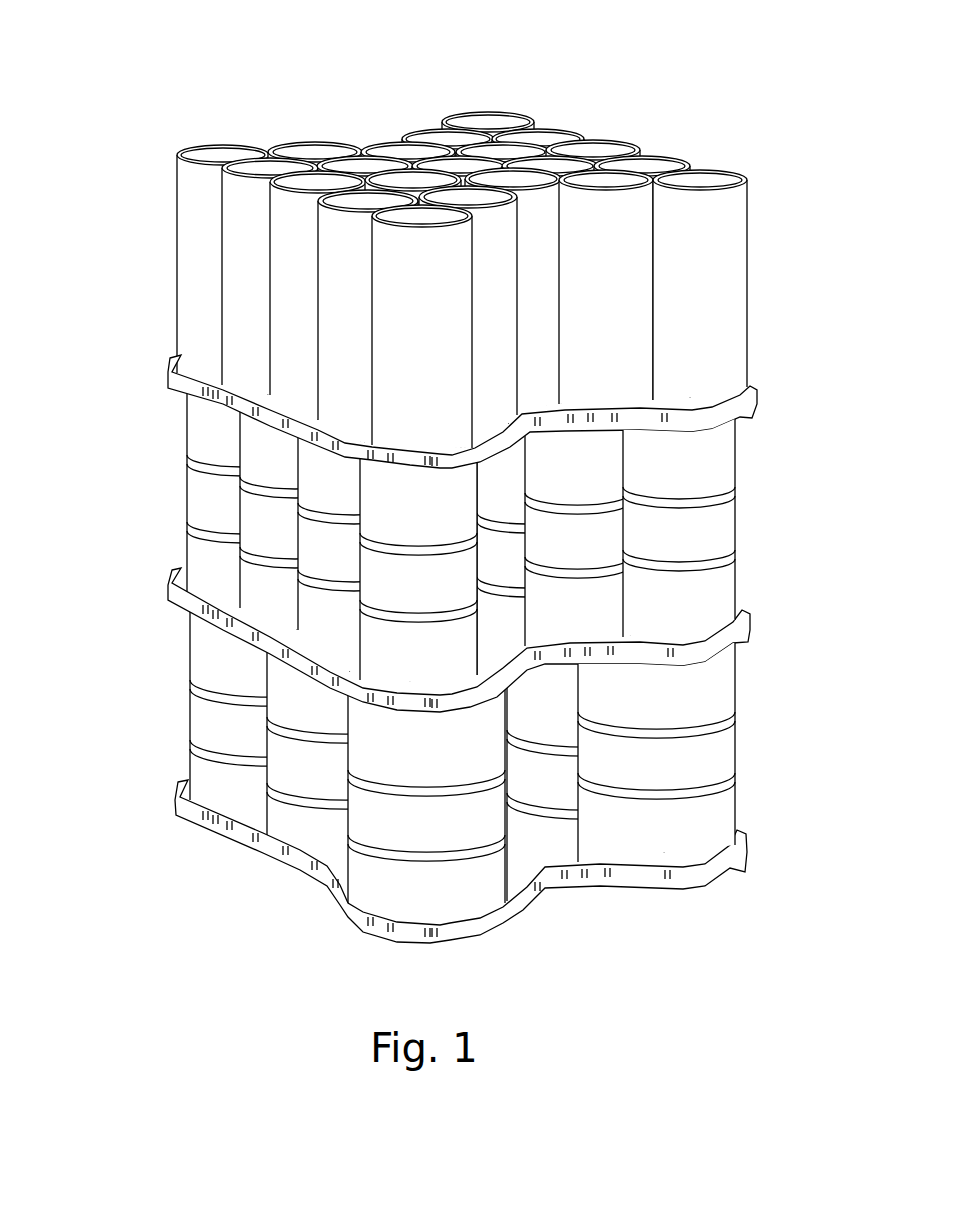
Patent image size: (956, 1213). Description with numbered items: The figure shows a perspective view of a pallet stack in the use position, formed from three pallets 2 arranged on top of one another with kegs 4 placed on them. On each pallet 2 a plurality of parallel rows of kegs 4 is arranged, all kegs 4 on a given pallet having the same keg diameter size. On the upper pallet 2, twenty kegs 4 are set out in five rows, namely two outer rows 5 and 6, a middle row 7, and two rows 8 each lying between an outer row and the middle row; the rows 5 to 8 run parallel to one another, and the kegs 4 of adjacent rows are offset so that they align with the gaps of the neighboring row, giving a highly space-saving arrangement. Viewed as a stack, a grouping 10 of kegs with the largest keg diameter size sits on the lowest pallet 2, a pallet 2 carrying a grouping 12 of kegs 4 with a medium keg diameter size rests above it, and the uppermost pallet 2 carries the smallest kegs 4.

The pallet 2 is at (755, 400).
The keg 4 is at (720, 228).
The outer row 5 is at (435, 497).
The outer row 6 is at (493, 110).
The middle row 7 is at (477, 233).
The row 8 is at (300, 143).
The grouping of kegs with the largest keg diameter size 10 is at (310, 848).
The grouping of kegs with a medium keg diameter size 12 is at (205, 545).